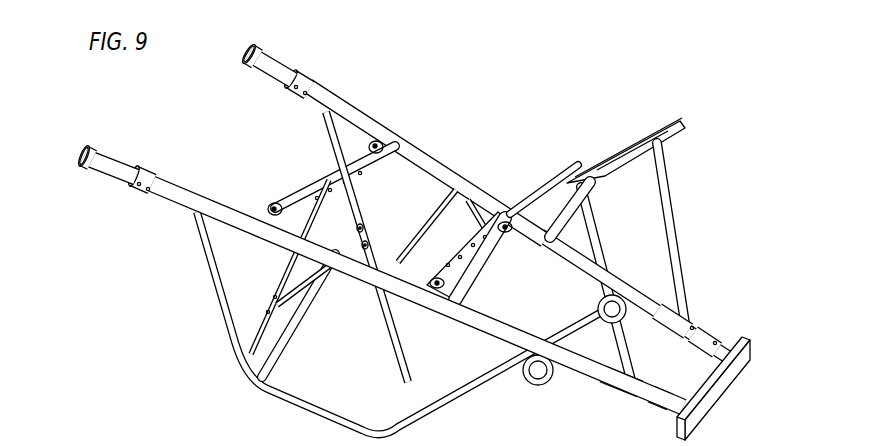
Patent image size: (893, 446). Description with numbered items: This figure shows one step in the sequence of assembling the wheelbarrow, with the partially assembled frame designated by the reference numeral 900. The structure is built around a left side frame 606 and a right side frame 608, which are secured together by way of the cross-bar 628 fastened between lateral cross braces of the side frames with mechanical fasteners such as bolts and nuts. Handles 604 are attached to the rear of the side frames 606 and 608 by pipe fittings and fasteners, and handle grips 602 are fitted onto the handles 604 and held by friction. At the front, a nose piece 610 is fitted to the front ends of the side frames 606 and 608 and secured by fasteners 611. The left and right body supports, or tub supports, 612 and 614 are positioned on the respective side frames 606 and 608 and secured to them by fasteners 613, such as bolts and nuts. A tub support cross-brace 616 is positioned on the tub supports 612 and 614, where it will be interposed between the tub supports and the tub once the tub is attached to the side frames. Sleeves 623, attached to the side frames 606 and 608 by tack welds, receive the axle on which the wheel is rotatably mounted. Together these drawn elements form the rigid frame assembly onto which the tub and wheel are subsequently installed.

The folding cart frame assembly 900 is at (578, 96).
The handle grips 602 is at (277, 78).
The handles 604 is at (313, 80).
The left side frame 606 is at (233, 338).
The right side frame 608 is at (353, 112).
The nose piece 610 is at (747, 368).
The fasteners 611 is at (718, 340).
The left body support 612 is at (653, 222).
The fasteners 613 is at (437, 277).
The right body support 614 is at (683, 288).
The tub support cross-brace 616 is at (680, 122).
The sleeves 623 is at (540, 383).
The cross-bar 628 is at (300, 282).